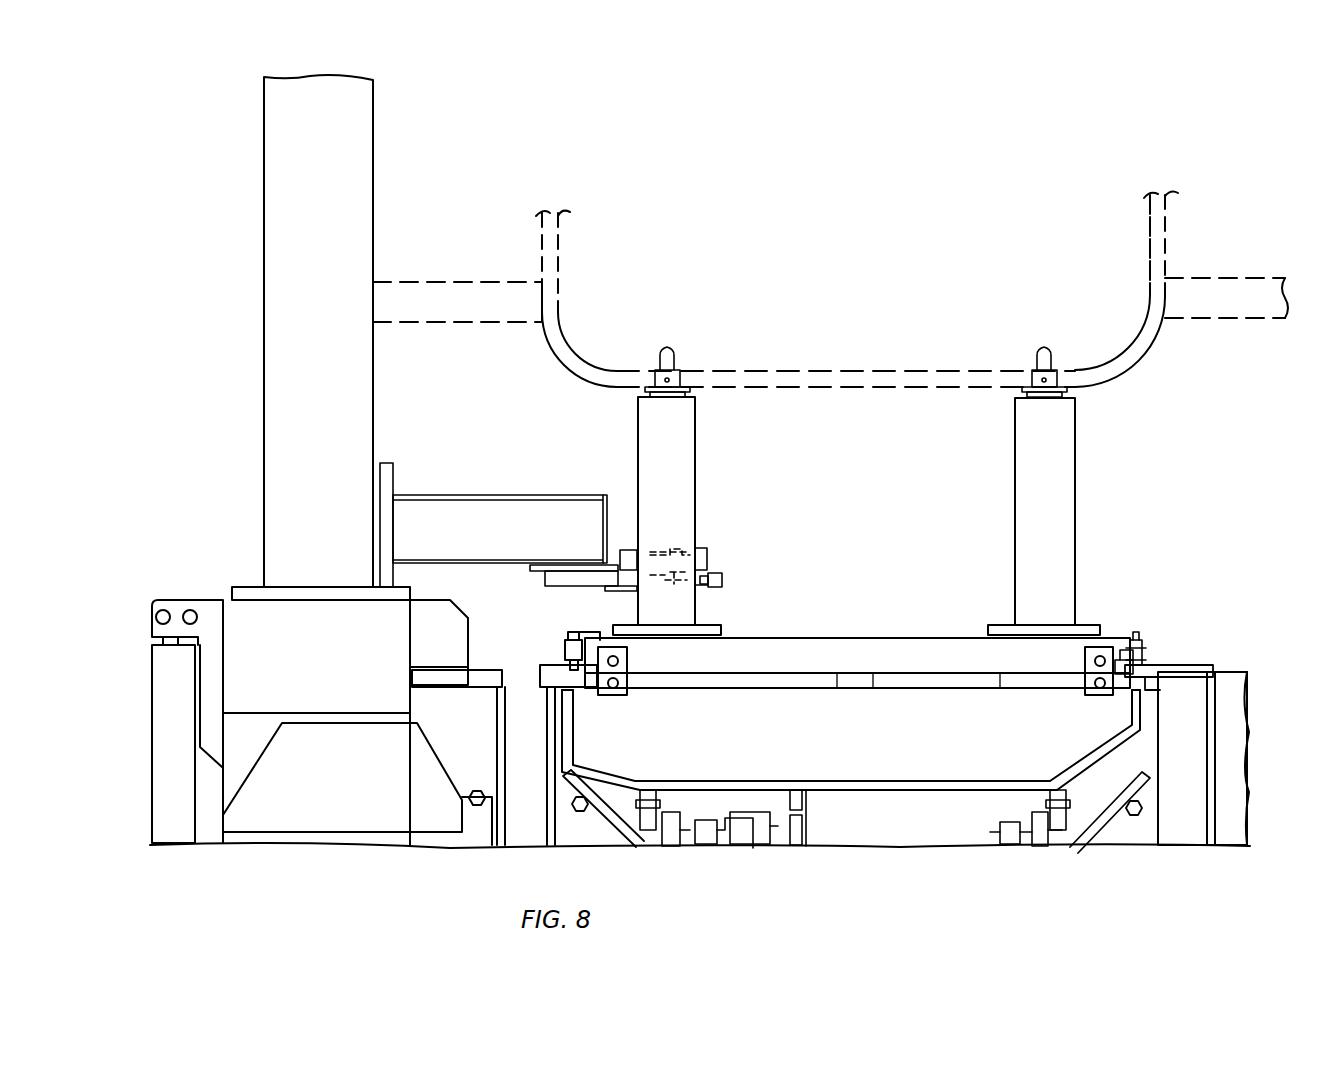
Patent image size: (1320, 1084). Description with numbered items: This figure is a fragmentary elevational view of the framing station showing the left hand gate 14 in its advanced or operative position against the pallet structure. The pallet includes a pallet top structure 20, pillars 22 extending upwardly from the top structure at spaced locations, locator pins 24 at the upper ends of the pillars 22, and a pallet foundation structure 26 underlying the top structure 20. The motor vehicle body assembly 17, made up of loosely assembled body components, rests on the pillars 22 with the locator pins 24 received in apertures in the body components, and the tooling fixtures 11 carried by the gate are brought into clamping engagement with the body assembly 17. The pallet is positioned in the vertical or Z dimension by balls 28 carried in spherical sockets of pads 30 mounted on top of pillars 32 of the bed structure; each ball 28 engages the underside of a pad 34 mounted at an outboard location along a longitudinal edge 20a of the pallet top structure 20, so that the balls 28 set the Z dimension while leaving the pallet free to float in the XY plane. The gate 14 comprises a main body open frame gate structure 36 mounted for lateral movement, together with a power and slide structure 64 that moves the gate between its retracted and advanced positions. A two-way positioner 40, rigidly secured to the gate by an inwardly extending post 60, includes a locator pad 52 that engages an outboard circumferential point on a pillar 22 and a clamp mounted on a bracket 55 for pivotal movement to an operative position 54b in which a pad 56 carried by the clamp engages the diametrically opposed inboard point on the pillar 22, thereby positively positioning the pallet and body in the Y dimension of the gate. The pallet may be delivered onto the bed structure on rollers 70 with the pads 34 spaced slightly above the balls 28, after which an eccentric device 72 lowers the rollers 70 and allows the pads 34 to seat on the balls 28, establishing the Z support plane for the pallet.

The tooling fixtures 11 is at (405, 282).
The left gate 14 is at (253, 170).
The motor vehicle body assembly 17 is at (1166, 231).
The pallet top structure 20 is at (918, 637).
The longitudinal edge 20a is at (1108, 637).
The pillars 22 is at (697, 426).
The locator pins 24 is at (665, 347).
The pallet foundation structure 26 is at (889, 760).
The balls 28 is at (1145, 656).
The pads 30 is at (1200, 666).
The pillars 32 is at (520, 732).
The pad 34 is at (1140, 642).
The main body open frame gate structure 36 is at (262, 222).
The two-way positioner 40 is at (752, 541).
The locator pad 52 is at (628, 582).
The operative position 54b is at (722, 578).
The bracket 55 is at (700, 555).
The pad 56 is at (708, 588).
The post 60 is at (493, 495).
The power and slide structure 64 is at (145, 630).
The rollers 70 is at (1062, 828).
The eccentric device 72 is at (1032, 838).